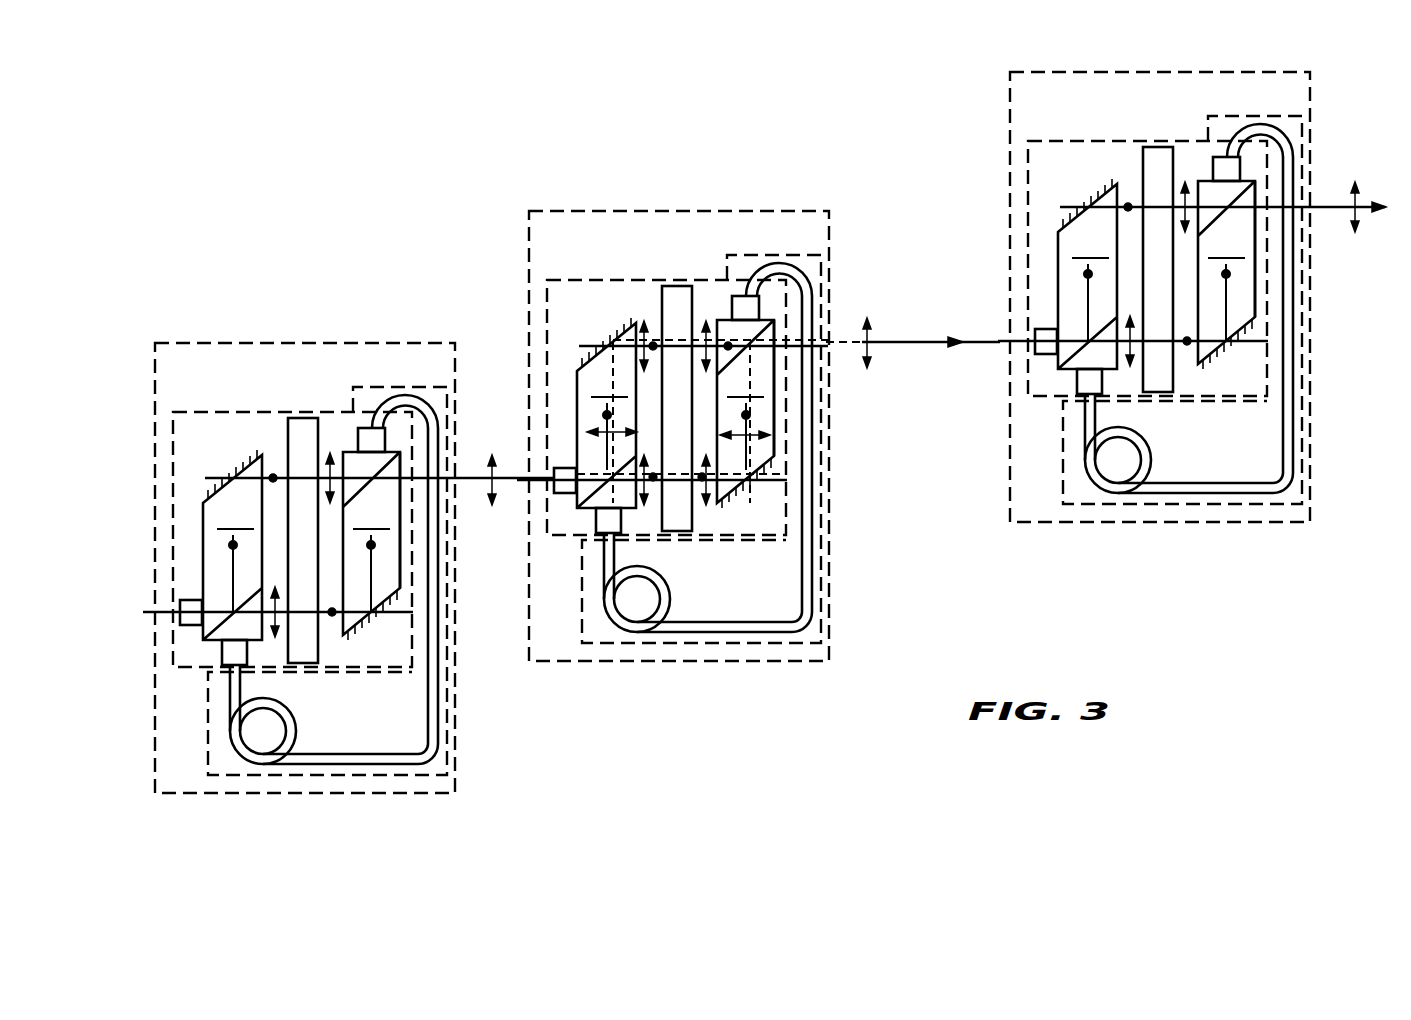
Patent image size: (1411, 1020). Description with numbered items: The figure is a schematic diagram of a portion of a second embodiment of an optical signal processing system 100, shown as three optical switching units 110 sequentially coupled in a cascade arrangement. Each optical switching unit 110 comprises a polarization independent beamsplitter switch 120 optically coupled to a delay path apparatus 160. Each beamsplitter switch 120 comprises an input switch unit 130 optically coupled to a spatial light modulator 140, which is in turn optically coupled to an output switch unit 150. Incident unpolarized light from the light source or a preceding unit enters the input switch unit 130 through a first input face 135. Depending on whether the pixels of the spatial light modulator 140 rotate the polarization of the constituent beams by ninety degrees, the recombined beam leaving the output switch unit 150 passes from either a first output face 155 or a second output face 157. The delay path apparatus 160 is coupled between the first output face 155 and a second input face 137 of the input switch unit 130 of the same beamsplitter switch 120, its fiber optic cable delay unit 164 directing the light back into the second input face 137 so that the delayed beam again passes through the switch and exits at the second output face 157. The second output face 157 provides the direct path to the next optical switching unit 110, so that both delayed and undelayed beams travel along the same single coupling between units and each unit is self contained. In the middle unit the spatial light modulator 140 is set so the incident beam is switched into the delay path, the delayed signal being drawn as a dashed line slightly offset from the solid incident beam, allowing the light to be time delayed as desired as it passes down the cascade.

The optical signal processing system 100 is at (152, 265).
The optical switching unit 110 is at (236, 344).
The polarization independent beamsplitter switch (PIBS) 120 is at (226, 412).
The input switch unit 130 is at (660, 409).
The first input face 135 is at (206, 601).
The second input face 137 is at (246, 642).
The spatial light modulator 140 is at (290, 446).
The output switch unit 150 is at (799, 410).
The first output face 155 is at (357, 452).
The second output face 157 is at (393, 493).
The delay path apparatus 160 is at (330, 776).
The fiber optic cable delay unit 164 is at (440, 716).